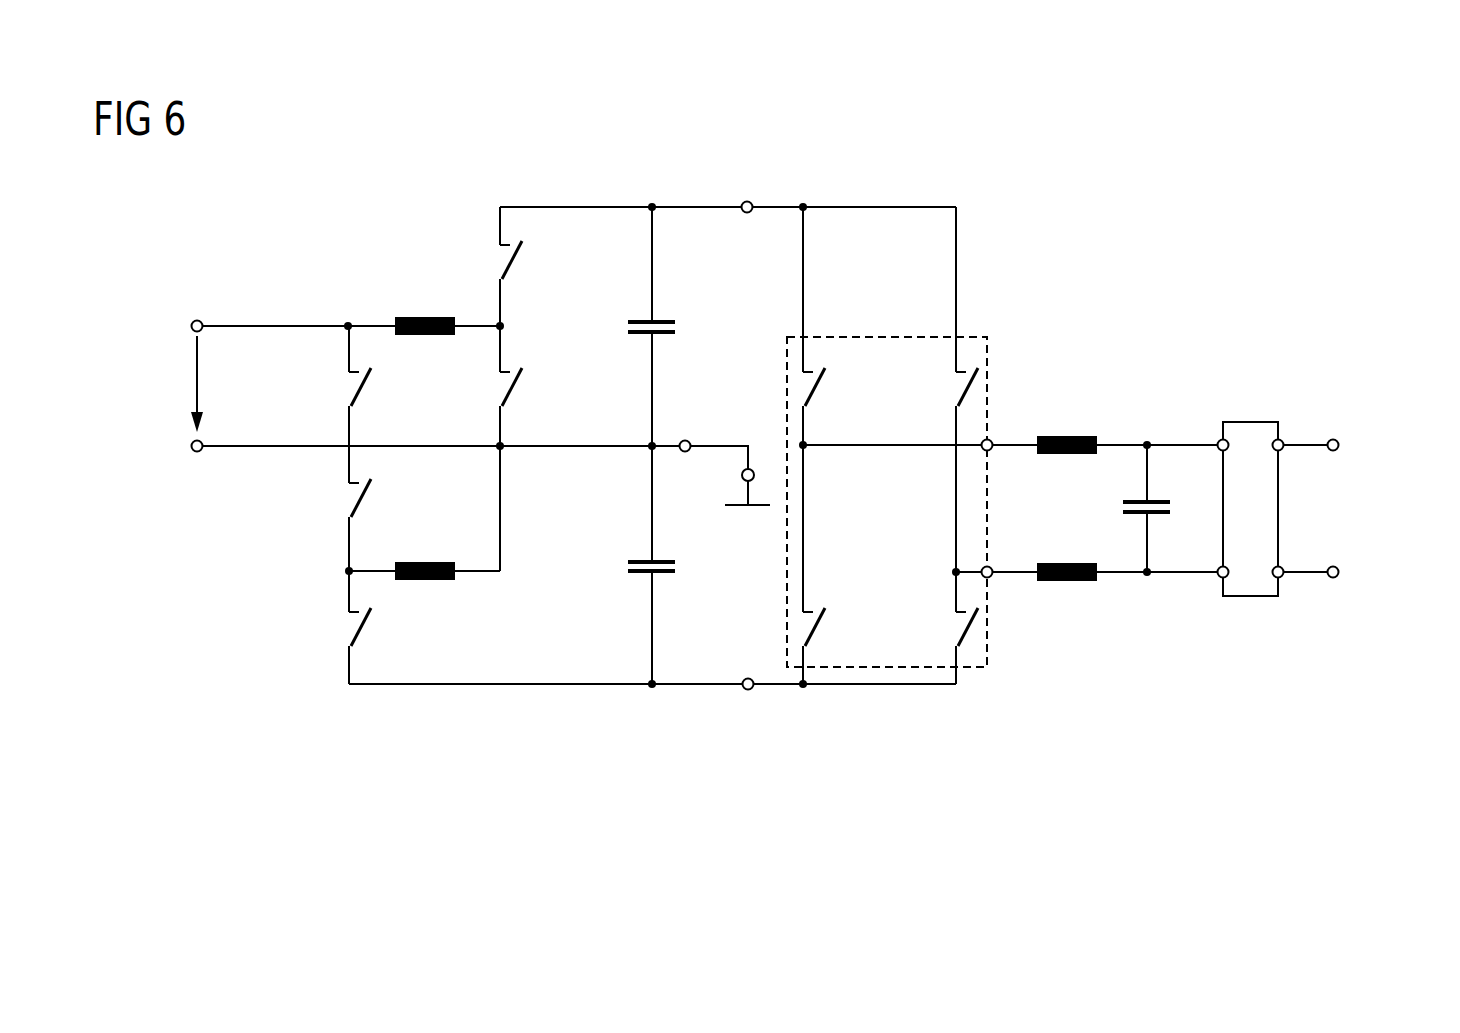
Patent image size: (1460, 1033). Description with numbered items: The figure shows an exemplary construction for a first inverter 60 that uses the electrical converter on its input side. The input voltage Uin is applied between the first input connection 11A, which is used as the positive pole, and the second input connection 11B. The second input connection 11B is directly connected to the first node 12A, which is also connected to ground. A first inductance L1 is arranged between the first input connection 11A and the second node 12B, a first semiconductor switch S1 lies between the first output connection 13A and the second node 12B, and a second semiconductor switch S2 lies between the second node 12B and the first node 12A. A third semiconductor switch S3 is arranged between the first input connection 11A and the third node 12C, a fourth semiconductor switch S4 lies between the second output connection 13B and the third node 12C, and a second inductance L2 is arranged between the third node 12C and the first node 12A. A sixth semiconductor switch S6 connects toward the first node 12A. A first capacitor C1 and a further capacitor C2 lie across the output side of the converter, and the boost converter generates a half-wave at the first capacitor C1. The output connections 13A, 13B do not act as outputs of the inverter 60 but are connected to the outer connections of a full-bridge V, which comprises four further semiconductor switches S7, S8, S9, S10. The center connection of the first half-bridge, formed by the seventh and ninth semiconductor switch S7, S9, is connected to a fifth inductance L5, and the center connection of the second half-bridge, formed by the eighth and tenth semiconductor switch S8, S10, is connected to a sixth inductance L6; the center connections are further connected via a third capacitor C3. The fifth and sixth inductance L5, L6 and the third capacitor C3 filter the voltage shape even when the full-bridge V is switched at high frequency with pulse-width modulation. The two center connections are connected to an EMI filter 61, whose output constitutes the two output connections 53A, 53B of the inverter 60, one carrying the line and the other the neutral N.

The first inverter 60 is at (298, 222).
The first input connection 11A is at (191, 326).
The second input connection 11B is at (191, 446).
The input voltage Uin is at (197, 380).
The first node 12A is at (650, 449).
The second node 12B is at (505, 326).
The third node 12C is at (345, 571).
The first output connection 13A is at (747, 201).
The second output connection 13B is at (748, 690).
The first inductance L1 is at (430, 318).
The second inductance L2 is at (443, 581).
The fifth inductance L5 is at (1067, 455).
The sixth inductance L6 is at (1052, 564).
The first capacitor C1 is at (663, 335).
The second DC link capacitor C2 is at (663, 575).
The third capacitor C3 is at (1160, 514).
The first semiconductor switch S1 is at (508, 260).
The second semiconductor switch S2 is at (508, 387).
The third semiconductor switch S3 is at (357, 498).
The fourth semiconductor switch S4 is at (357, 627).
The sixth semiconductor switch S6 is at (357, 387).
The seventh semiconductor switch S7 is at (811, 387).
The eighth semiconductor switch S8 is at (964, 387).
The ninth semiconductor switch S9 is at (811, 627).
The tenth semiconductor switch S10 is at (964, 627).
The full-bridge V is at (888, 668).
The EMI filter 61 is at (1250, 597).
The output connection 53A is at (1340, 446).
The output connection 53B is at (1340, 573).
The neutral output N is at (1334, 545).